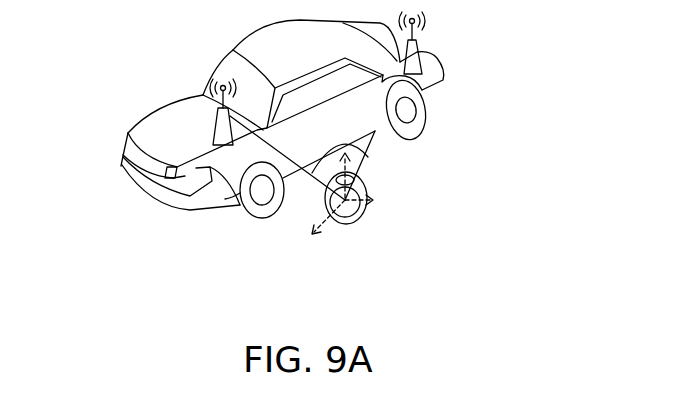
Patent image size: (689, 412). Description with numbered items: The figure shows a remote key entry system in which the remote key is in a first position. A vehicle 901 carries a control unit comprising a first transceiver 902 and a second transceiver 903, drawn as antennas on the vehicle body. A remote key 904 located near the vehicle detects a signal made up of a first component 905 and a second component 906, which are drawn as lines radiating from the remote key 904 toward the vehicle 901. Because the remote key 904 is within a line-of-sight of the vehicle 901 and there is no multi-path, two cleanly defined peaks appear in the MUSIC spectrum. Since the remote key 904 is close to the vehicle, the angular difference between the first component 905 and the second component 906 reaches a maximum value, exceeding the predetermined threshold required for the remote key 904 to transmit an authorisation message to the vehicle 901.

The vehicle 901 is at (148, 113).
The first transceiver 902 is at (202, 133).
The second transceiver 903 is at (429, 71).
The remote key 904 is at (362, 231).
The first component 905 is at (298, 176).
The second component 906 is at (378, 151).